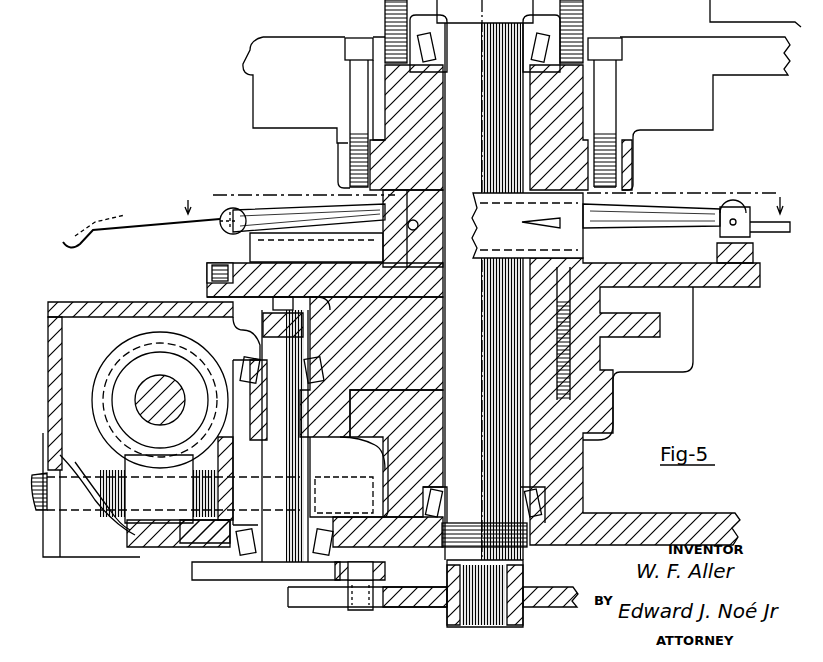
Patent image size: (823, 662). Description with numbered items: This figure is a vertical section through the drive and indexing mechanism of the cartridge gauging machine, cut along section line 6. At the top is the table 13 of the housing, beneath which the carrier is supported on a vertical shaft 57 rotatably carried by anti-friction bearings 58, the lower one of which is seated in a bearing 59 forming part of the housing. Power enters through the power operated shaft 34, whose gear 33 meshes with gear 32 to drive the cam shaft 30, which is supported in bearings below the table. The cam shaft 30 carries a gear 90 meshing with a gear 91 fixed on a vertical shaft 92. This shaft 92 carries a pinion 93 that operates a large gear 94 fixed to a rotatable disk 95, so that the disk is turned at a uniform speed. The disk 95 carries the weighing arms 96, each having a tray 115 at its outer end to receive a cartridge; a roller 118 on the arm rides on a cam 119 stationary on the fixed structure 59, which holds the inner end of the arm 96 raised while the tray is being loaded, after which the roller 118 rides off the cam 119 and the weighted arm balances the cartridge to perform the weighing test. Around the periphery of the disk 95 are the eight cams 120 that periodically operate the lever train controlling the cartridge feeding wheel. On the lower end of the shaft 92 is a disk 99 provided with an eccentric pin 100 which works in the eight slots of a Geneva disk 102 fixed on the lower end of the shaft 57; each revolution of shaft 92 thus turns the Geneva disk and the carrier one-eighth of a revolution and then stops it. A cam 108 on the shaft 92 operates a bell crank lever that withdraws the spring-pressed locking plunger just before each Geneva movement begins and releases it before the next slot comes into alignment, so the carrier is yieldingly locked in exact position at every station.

The table 13 is at (737, 82).
The shaft 57 is at (484, 280).
The anti-friction bearings 58 is at (540, 48).
The bearing 59 is at (612, 396).
The weighing arm 96 is at (290, 203).
The rotatable disk 95 is at (753, 290).
The large gear 94 is at (667, 327).
The pinion 93 is at (218, 302).
The vertical shaft 92 is at (310, 452).
The gear 91 is at (330, 415).
The gear 90 is at (106, 362).
The cam shaft 30 is at (156, 383).
The gear 32 is at (182, 372).
The gear 33 is at (166, 543).
The power operated shaft 34 is at (84, 548).
The disk 99 is at (230, 581).
The pin 100 is at (363, 610).
The Geneva disk 102 is at (441, 608).
The cam 108 is at (386, 574).
The tray 115 is at (82, 248).
The roller 118 is at (372, 238).
The cam 119 is at (562, 226).
The cams 120 is at (214, 270).
The section line 6- 6 is at (482, 195).